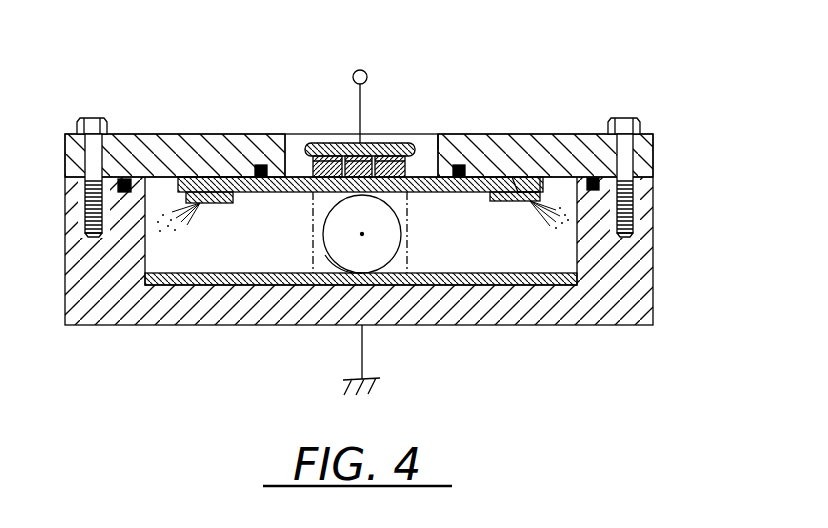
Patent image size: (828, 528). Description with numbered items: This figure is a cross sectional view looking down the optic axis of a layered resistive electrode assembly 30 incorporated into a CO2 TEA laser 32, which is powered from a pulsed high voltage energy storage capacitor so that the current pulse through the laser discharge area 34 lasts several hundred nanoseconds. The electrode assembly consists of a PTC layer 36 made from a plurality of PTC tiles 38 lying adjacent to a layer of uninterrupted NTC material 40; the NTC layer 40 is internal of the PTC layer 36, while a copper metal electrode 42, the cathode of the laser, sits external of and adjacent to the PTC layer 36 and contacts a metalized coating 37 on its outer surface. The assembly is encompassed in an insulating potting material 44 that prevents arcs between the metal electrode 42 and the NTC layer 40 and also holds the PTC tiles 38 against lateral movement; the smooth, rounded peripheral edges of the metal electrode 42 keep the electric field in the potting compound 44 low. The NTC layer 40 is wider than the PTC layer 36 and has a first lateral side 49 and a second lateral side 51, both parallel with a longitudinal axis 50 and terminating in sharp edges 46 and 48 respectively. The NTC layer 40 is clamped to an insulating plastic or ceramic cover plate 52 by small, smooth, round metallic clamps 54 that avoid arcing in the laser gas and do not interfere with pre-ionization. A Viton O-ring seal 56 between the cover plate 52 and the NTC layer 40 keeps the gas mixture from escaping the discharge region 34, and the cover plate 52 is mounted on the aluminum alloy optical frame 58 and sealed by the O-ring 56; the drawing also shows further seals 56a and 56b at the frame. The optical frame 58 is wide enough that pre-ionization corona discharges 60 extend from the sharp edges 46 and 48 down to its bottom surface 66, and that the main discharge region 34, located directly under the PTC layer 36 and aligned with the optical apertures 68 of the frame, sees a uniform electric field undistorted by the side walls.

The layered resistive electrode assembly 30 is at (424, 148).
The TEA laser 32 is at (660, 118).
The laser discharge area 34 is at (347, 255).
The PTC layer 36 is at (303, 172).
The metalized coating 37 is at (306, 193).
The PTC tiles 38 is at (333, 145).
The NTC layer 40 is at (413, 193).
The metal electrode 42 is at (388, 156).
The insulating potting material 44 is at (438, 134).
The sharp edge 46 is at (208, 203).
The sharp edge 48 is at (520, 201).
The first lateral side 49 is at (203, 177).
The longitudinal axis 50 is at (362, 233).
The second lateral side 51 is at (515, 178).
The cover plate 52 is at (570, 138).
The metallic clamps 54 is at (153, 137).
The O-ring seal 56 is at (262, 167).
The seal 56a is at (462, 167).
The seal 56b is at (594, 190).
The optical frame 58 is at (648, 188).
The pre-ionization corona discharges 60 is at (178, 213).
The bottom surface 66 is at (264, 268).
The optical apertures 68 is at (404, 255).